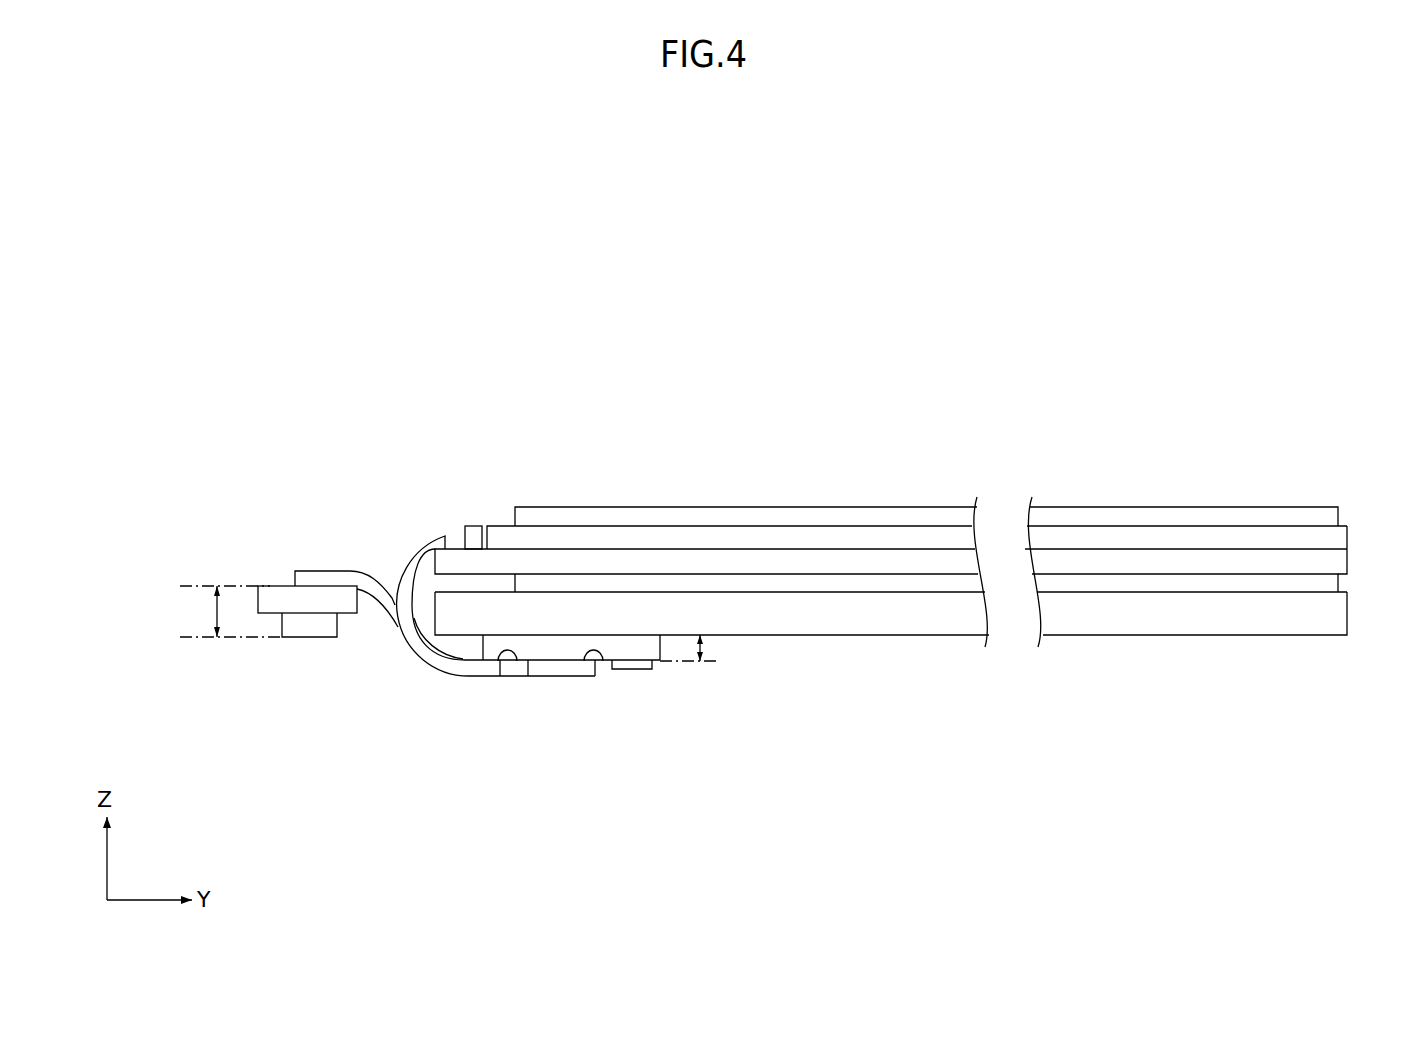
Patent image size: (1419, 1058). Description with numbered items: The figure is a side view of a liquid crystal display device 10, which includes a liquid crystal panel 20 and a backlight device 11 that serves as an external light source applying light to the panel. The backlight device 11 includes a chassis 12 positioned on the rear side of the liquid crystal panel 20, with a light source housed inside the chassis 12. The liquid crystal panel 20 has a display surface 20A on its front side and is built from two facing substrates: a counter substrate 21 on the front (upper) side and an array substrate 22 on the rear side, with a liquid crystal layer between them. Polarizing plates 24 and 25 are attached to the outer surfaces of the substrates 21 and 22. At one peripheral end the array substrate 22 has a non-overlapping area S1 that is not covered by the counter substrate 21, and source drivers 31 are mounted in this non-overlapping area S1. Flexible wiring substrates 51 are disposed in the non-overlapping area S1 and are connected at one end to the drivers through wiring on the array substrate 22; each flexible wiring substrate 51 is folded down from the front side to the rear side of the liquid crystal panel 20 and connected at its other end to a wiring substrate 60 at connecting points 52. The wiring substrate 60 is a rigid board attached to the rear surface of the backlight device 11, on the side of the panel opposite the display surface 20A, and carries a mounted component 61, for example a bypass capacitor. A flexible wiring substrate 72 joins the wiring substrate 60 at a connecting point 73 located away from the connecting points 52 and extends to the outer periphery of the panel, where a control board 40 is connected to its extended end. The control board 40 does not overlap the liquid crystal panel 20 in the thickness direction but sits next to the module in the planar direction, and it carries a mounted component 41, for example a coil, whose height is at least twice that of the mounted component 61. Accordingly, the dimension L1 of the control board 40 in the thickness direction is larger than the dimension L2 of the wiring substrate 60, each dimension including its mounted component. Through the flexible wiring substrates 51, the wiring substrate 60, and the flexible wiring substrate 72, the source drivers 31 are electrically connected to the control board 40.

The liquid crystal display device 10 is at (1212, 562).
The backlight device 11 is at (1200, 626).
The chassis 12 is at (937, 623).
The liquid crystal panel 20 is at (1212, 570).
The display surface 20A is at (918, 507).
The counter substrate 21 is at (745, 537).
The array substrate 22 is at (838, 560).
The polarizing plate 24 is at (1087, 513).
The polarizing plate 25 is at (1090, 585).
The source driver 31 is at (474, 525).
The control board 40 is at (278, 595).
The mounted component 41 is at (310, 630).
The flexible wiring substrate 51 is at (430, 653).
The connecting point 52 is at (500, 653).
The wiring substrate 60 is at (558, 647).
The mounted component 61 is at (633, 664).
The flexible wiring substrate 72 is at (376, 582).
The connecting point 73 is at (594, 668).
The non-overlapping area S1 is at (455, 547).
The dimension of the control board L1 is at (228, 611).
The dimension of the wiring substrate L2 is at (701, 651).